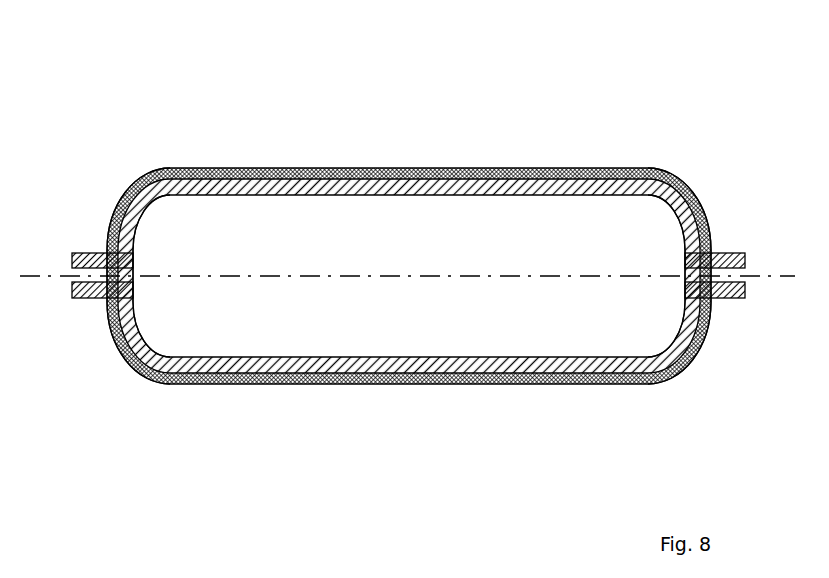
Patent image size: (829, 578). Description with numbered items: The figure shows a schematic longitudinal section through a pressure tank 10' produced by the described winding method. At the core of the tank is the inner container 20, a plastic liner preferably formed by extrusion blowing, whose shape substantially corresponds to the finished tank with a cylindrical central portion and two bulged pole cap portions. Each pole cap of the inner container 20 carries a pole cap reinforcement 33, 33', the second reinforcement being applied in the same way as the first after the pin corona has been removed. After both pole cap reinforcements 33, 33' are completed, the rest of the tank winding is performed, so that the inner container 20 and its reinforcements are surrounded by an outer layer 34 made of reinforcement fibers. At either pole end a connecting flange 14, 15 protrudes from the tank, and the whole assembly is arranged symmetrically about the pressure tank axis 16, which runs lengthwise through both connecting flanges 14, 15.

The pressure tank 10' is at (290, 52).
The connecting flange 14 is at (84, 253).
The connecting flange 15 is at (731, 253).
The pressure tank axis 16 is at (777, 278).
The inner container 20 is at (337, 196).
The pole cap reinforcement 33 is at (138, 249).
The pole cap reinforcement 33' is at (682, 255).
The outer layer 34 is at (500, 168).